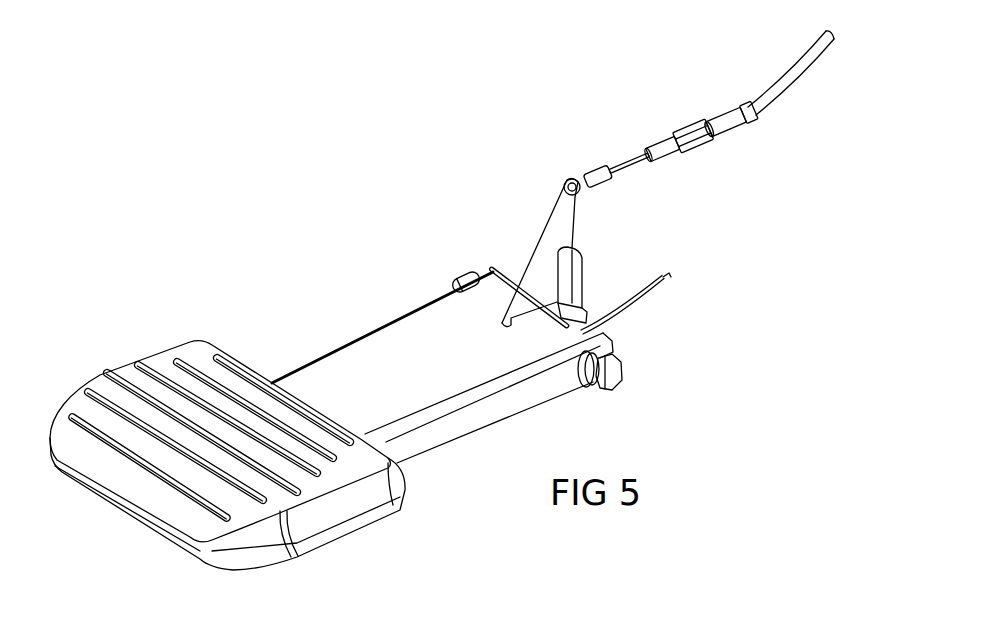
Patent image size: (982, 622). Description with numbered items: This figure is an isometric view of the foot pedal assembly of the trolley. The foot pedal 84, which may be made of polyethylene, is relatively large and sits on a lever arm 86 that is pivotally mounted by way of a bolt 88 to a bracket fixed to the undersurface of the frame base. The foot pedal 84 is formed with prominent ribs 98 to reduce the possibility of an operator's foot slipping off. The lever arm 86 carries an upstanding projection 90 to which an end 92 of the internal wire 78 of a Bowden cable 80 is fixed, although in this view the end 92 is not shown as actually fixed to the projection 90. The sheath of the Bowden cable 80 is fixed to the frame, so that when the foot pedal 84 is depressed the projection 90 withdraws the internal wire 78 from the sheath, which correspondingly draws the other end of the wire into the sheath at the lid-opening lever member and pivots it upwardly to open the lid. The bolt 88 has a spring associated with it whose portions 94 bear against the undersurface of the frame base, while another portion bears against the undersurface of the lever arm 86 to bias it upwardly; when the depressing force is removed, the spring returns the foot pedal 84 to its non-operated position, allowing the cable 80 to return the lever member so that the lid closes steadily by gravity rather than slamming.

The internal wire 78 is at (621, 168).
The Bowden cable 80 is at (801, 62).
The foot pedal 84 is at (161, 358).
The lever arm 86 is at (405, 342).
The bolt 88 is at (618, 374).
The upstanding projection 90 is at (545, 258).
The end 92 is at (563, 192).
The spring portions 94 is at (580, 224).
The ribs 98 is at (180, 450).